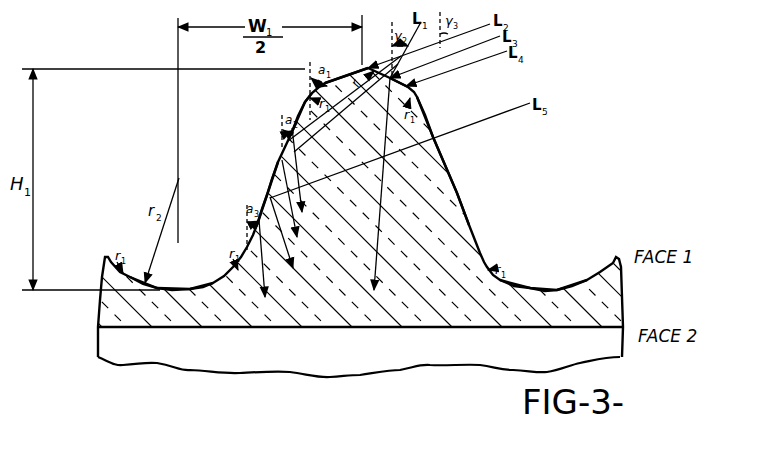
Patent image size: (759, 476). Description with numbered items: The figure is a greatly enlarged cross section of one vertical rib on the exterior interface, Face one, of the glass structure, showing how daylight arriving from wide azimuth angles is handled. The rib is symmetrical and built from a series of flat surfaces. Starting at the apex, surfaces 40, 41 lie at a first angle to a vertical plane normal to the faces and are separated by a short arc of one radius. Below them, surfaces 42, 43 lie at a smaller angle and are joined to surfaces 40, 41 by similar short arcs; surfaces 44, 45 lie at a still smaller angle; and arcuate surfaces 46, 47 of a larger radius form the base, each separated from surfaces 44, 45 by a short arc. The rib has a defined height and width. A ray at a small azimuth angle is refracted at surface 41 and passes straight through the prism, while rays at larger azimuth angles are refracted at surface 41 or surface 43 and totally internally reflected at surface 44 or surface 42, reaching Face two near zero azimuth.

The apex surface 40 is at (365, 68).
The apex surface 41 is at (406, 86).
The second flat surface 42 is at (304, 108).
The second flat surface 43 is at (438, 138).
The third flat surface 44 is at (272, 188).
The third flat surface 45 is at (457, 193).
The arcuate surface 46 is at (220, 280).
The arcuate surface 47 is at (558, 270).